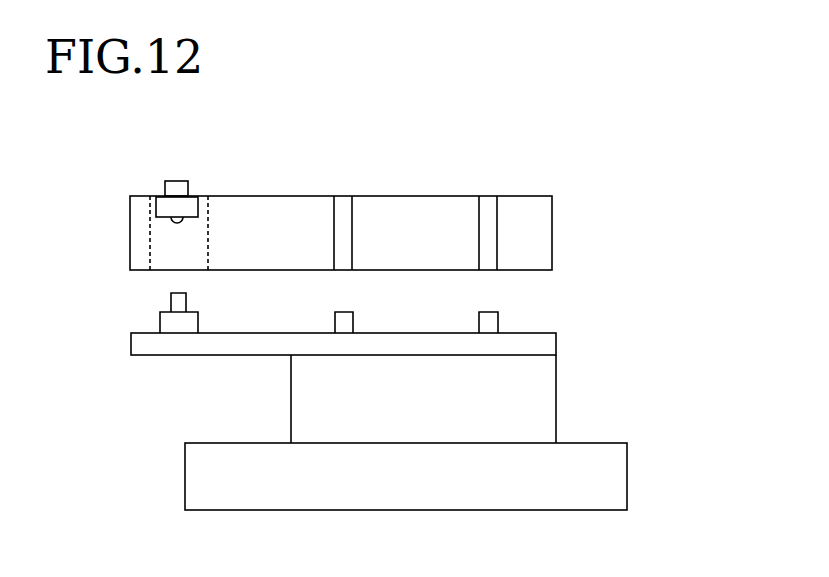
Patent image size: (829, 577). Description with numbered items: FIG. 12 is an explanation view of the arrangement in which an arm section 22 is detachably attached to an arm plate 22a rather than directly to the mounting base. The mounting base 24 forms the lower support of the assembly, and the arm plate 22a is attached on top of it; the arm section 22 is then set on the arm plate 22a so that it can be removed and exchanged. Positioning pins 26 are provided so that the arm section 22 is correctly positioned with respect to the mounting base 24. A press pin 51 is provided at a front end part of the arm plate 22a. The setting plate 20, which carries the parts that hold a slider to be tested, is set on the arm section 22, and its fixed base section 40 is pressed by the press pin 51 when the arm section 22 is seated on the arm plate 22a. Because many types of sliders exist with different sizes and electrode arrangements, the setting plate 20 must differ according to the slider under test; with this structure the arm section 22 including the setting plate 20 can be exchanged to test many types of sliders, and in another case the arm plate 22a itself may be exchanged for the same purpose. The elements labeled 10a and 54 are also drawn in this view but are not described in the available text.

The base 10a is at (605, 473).
The setting plate 20 is at (173, 190).
The arm section 22 is at (407, 213).
The arm plate 22a is at (527, 345).
The mounting base 24 is at (538, 397).
The positioning pins 26 is at (347, 328).
The fixed base section 40 is at (167, 208).
The press pin 51 is at (175, 302).
The lens 54 is at (177, 223).